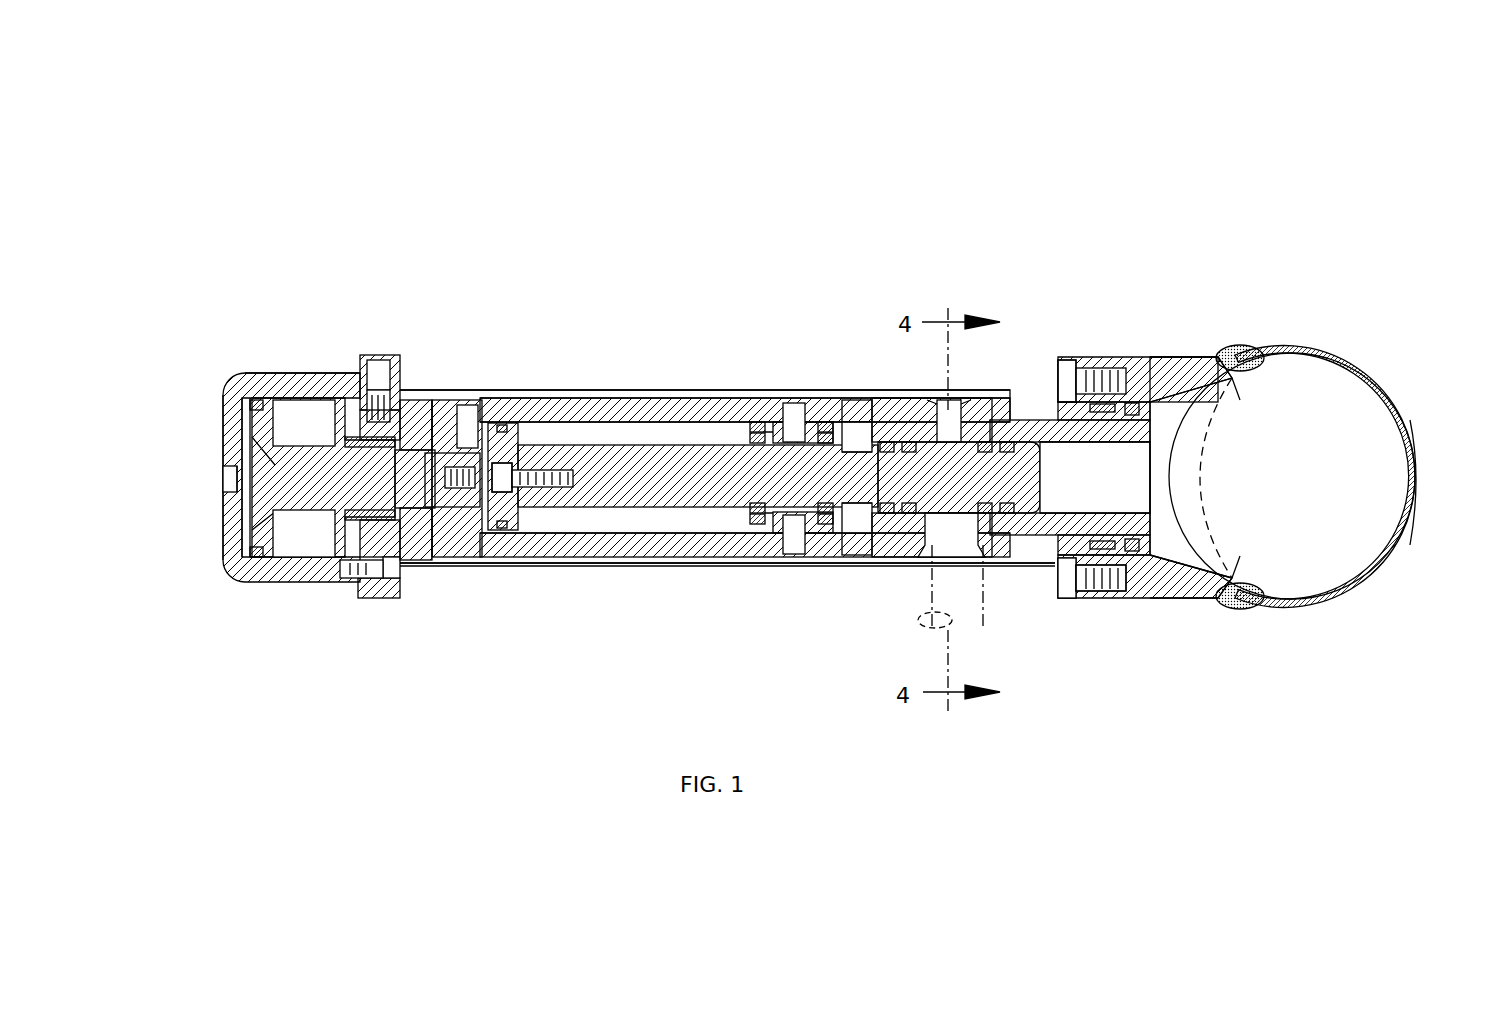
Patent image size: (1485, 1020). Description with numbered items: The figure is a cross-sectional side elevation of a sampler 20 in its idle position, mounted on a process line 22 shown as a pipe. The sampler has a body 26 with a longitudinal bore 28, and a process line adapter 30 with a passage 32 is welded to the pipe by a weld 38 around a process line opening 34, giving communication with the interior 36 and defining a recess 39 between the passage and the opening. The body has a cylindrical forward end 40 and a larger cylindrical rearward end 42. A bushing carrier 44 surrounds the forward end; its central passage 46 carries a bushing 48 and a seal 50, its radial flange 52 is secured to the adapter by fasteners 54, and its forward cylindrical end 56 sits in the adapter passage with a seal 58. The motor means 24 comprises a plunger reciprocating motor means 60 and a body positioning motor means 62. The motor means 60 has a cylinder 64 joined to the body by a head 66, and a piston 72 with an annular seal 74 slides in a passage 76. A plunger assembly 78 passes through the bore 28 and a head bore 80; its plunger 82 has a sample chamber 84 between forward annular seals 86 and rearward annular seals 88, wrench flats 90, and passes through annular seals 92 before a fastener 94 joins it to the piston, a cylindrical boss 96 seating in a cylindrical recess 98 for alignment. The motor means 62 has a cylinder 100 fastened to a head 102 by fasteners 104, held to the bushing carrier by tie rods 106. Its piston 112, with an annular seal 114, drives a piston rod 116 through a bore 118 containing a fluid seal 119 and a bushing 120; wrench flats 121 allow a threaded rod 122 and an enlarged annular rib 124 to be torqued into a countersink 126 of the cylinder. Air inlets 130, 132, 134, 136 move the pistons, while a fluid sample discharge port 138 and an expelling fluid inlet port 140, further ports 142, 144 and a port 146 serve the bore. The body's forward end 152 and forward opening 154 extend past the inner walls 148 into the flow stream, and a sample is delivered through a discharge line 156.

The sampler 20 is at (696, 182).
The process line 22 is at (1352, 356).
The motor means 24 is at (651, 284).
The sampler body 26 is at (1025, 538).
The longitudinal bore 28 is at (1136, 512).
The process line adapter 30 is at (1180, 356).
The passage 32 is at (1202, 588).
The process line opening 34 is at (1262, 368).
The interior 36 is at (1326, 509).
The weld 38 is at (1236, 346).
The recess 39 is at (1172, 520).
The cylindrical forward end 40 is at (1138, 598).
The cylindrical rearward end 42 is at (848, 424).
The bushing carrier 44 is at (1092, 392).
The central passage 46 is at (1072, 512).
The bushing 48 is at (1108, 412).
The seal 50 is at (1128, 416).
The radial flange 52 is at (1076, 362).
The fasteners 54 is at (1064, 378).
The forward cylindrical end 56 is at (1142, 365).
The seal 58 is at (1100, 592).
The sampler plunger reciprocating motor means 60 is at (705, 318).
The sampler body positioning motor means 62 is at (290, 302).
The cylinder 64 is at (655, 412).
The head 66 is at (795, 425).
The piston 72 is at (552, 424).
The annular seal 74 is at (503, 424).
The passage 76 is at (662, 545).
The plunger assembly 78 is at (646, 486).
The bore 80 is at (756, 426).
The plunger 82 is at (1030, 430).
The sample chamber 84 is at (932, 540).
The annular seals 86 is at (985, 516).
The annular seals 88 is at (886, 515).
The wrench flats 90 is at (908, 515).
The annular seals 92 is at (790, 510).
The fastener 94 is at (500, 490).
The cylindrical boss 96 is at (585, 424).
The cylindrical recess 98 is at (532, 500).
The cylinder 100 is at (240, 375).
The head 102 is at (372, 590).
The fasteners 104 is at (392, 578).
The tie rods 106 is at (620, 394).
The piston 112 is at (246, 548).
The annular seal 114 is at (258, 548).
The piston rod 116 is at (272, 462).
The bore 118 is at (304, 423).
The fluid seal 119 is at (304, 533).
The bushing 120 is at (355, 522).
The wrench flats 121 is at (410, 452).
The threaded rod 122 is at (448, 488).
The enlarged annular rib 124 is at (424, 440).
The countersink 126 is at (416, 560).
The air inlet 130 is at (466, 420).
The air inlet 132 is at (822, 422).
The air inlet 134 is at (230, 478).
The air inlet 136 is at (377, 373).
The fluid sample discharge port 138 is at (952, 540).
The expelling fluid inlet port 140 is at (946, 404).
The port 142 is at (846, 410).
The port 144 is at (830, 548).
The port 146 is at (790, 552).
The inner walls 148 is at (1420, 445).
The forward end 152 is at (1152, 432).
The forward opening 154 is at (1152, 462).
The discharge line 156 is at (920, 628).